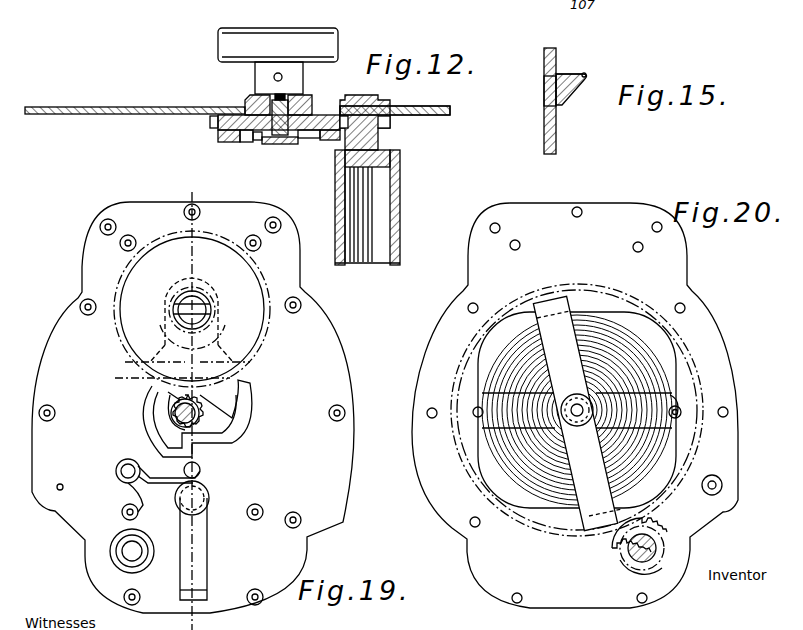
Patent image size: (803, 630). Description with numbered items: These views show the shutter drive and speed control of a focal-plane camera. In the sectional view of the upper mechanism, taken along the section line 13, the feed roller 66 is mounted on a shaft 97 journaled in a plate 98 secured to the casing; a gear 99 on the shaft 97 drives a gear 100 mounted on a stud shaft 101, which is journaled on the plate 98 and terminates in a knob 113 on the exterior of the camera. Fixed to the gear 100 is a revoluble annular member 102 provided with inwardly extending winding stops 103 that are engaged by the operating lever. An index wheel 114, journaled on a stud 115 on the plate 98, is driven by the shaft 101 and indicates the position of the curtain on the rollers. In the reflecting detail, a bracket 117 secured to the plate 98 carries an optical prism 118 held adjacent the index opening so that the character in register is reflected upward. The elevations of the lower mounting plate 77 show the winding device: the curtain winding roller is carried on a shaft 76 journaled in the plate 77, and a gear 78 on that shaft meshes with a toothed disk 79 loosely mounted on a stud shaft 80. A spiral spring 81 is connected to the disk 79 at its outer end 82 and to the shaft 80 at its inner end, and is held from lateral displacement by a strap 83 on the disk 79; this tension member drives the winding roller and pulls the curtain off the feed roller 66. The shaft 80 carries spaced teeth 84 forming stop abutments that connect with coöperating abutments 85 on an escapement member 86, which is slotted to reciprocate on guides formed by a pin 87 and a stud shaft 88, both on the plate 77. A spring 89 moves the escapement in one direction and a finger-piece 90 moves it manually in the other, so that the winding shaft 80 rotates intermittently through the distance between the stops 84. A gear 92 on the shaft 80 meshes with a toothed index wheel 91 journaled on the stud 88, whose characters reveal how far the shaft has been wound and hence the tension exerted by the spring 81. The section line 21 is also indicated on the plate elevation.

In FIG. 12, the hand setting knob stem 13 is at (278, 0).
In FIG. 12, the knob 113 is at (278, 45).
In FIG. 12, the stud shaft 101 is at (285, 95).
In FIG. 12, the stud 115 is at (150, 106).
In FIG. 12, the index wheel 114 is at (105, 116).
In FIG. 15, the index wheel 114 is at (544, 133).
In FIG. 12, the plate 98 is at (425, 107).
In FIG. 15, the plate 98 is at (544, 62).
In FIG. 12, the gear 100 is at (210, 121).
In FIG. 12, the revoluble annular member 102 is at (232, 142).
In FIG. 12, the winding stops 103 is at (250, 140).
In FIG. 12, the shaft 97 is at (380, 142).
In FIG. 12, the gear 99 is at (391, 120).
In FIG. 12, the feed roller 66 is at (378, 215).
In FIG. 15, the bracket 117 is at (568, 92).
In FIG. 15, the optical prism 118 is at (572, 74).
In FIG. 19, the mounting plate 77 is at (335, 440).
In FIG. 20, the mounting plate 77 is at (712, 360).
In FIG. 19, the center line 21 is at (188, 404).
In FIG. 19, the toothed index wheel 91 is at (192, 309).
In FIG. 19, the stud shaft 88 is at (197, 303).
In FIG. 19, the coöperating abutments 85 is at (140, 378).
In FIG. 19, the spaced teeth 84 is at (225, 402).
In FIG. 19, the stud shaft 80 is at (190, 415).
In FIG. 20, the stud shaft 80 is at (580, 427).
In FIG. 19, the escapement member 86 is at (202, 418).
In FIG. 19, the gear 92 is at (176, 407).
In FIG. 19, the spring 89 is at (145, 468).
In FIG. 19, the finger-piece 90 is at (196, 592).
In FIG. 19, the pin 87 is at (196, 504).
In FIG. 19, the shaft 76 is at (128, 552).
In FIG. 20, the shaft 76 is at (656, 548).
In FIG. 20, the toothed disk 79 is at (690, 420).
In FIG. 20, the spiral spring 81 is at (610, 320).
In FIG. 20, the strap 83 is at (577, 413).
In FIG. 20, the outer end of spring 82 is at (681, 410).
In FIG. 20, the gear 78 is at (660, 528).